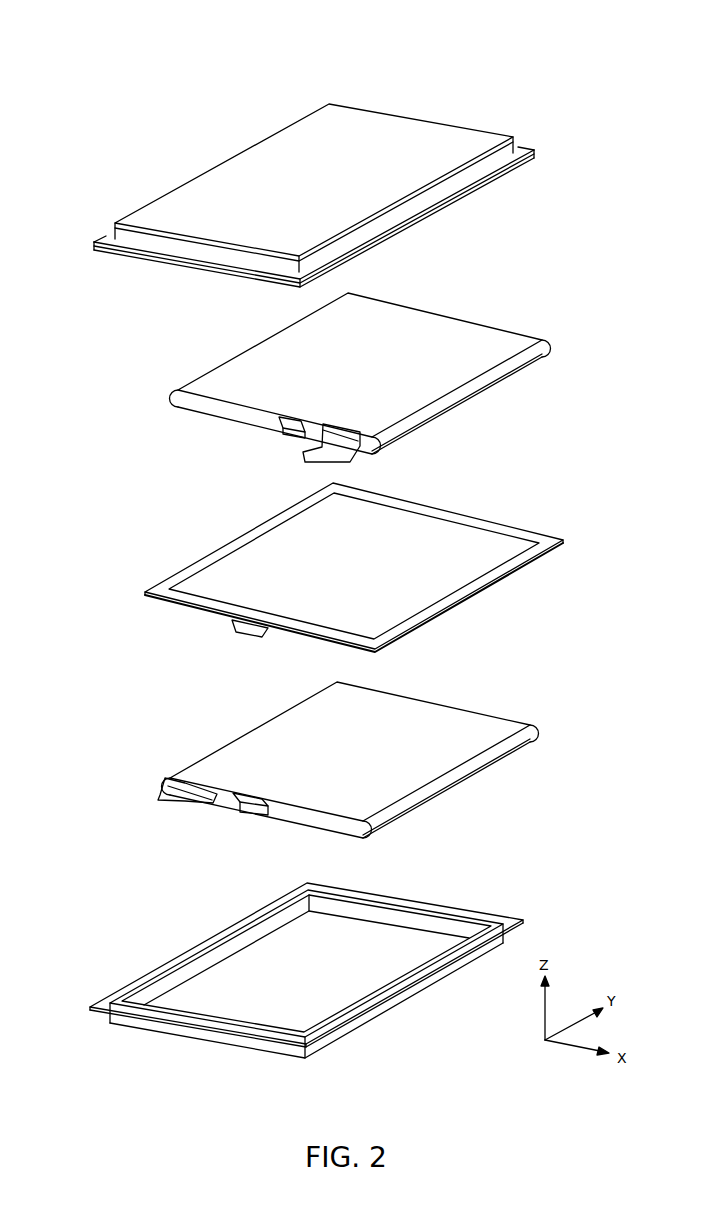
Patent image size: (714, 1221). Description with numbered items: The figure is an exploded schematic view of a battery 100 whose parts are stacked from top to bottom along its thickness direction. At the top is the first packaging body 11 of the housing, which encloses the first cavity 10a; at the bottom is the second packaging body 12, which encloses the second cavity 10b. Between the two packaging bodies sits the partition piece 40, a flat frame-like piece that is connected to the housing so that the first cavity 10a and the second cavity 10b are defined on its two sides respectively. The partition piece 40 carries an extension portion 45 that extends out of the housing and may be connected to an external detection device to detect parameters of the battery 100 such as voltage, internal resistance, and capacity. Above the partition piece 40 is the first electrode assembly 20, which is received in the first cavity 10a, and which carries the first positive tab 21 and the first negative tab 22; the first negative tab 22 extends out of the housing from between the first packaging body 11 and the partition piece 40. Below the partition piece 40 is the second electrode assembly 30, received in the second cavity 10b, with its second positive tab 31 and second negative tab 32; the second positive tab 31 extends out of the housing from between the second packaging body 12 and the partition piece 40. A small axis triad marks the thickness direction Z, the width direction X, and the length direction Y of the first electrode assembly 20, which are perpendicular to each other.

The battery 100 is at (321, 59).
The first cavity 10a is at (298, 195).
The first packaging body 11 is at (108, 243).
The first electrode assembly 20 is at (325, 388).
The first positive tab 21 is at (282, 433).
The first negative tab 22 is at (318, 447).
The partition piece 40 is at (340, 567).
The extension portion 45 is at (232, 630).
The second electrode assembly 30 is at (332, 763).
The second positive tab 31 is at (177, 798).
The second negative tab 32 is at (243, 810).
The second cavity 10b is at (310, 976).
The second packaging body 12 is at (190, 1033).